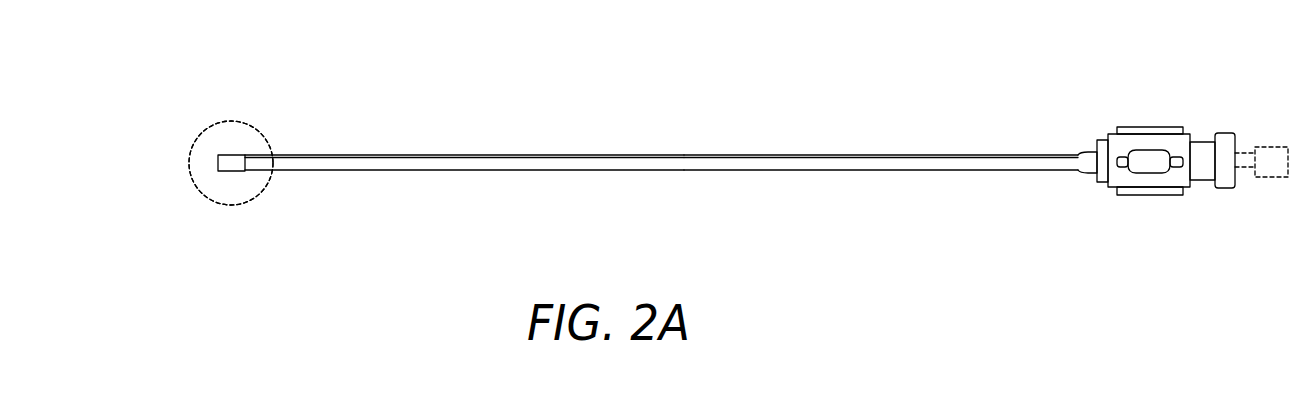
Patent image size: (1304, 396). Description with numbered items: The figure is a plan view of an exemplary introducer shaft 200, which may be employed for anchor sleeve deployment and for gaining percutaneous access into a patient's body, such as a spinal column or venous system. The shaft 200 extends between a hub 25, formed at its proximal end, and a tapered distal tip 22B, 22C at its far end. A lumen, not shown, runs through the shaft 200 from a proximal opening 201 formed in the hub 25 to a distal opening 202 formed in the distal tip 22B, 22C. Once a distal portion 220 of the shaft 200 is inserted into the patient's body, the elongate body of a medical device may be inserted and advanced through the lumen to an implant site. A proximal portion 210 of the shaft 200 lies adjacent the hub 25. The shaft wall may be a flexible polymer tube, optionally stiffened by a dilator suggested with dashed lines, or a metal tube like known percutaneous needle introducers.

The introducer shaft 200 is at (527, 202).
The handle portion 210 is at (1232, 97).
The distal portion 220 is at (680, 97).
The distal opening 202 is at (218, 162).
The tapered distal tip 22B is at (193, 178).
The tapered distal tip 22C is at (231, 163).
The hub 25 is at (1123, 195).
The proximal opening 201 is at (1237, 170).